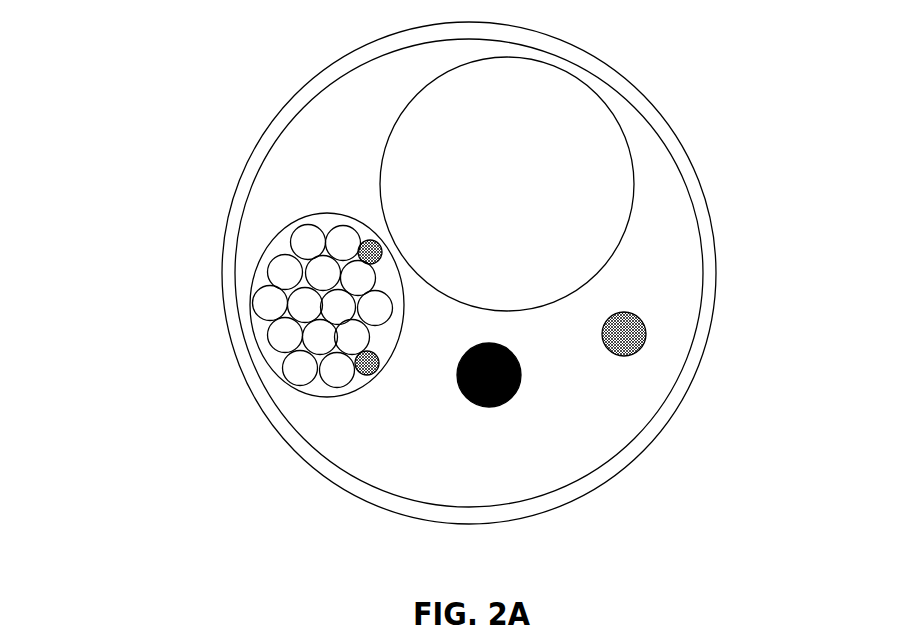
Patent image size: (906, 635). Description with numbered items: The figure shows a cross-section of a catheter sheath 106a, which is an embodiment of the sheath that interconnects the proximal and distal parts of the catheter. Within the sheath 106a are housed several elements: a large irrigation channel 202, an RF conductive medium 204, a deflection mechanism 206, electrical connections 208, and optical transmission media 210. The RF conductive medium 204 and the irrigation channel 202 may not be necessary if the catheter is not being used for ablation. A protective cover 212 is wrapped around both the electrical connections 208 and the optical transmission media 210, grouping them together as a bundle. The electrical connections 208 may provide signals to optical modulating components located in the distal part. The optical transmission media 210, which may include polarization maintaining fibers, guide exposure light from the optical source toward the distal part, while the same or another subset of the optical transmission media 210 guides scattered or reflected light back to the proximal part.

The sheath 106a is at (122, 91).
The irrigation channel 202 is at (632, 152).
The RF conductive medium 204 is at (642, 350).
The deflection mechanism 206 is at (510, 400).
The electrical connections 208 is at (273, 340).
The optical transmission media 210 is at (367, 373).
The protective cover 212 is at (270, 243).